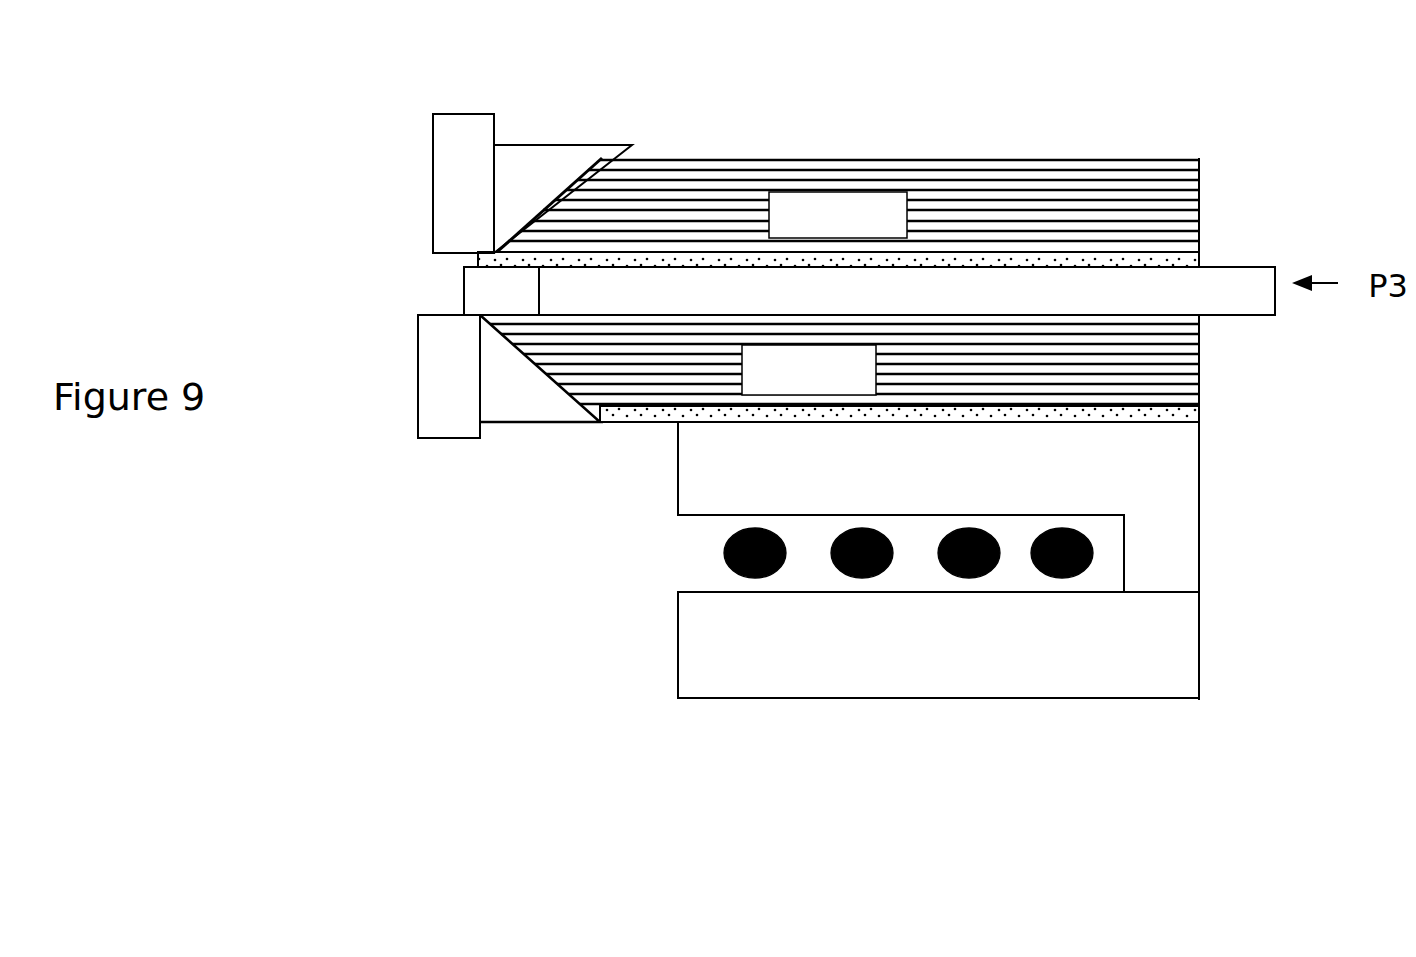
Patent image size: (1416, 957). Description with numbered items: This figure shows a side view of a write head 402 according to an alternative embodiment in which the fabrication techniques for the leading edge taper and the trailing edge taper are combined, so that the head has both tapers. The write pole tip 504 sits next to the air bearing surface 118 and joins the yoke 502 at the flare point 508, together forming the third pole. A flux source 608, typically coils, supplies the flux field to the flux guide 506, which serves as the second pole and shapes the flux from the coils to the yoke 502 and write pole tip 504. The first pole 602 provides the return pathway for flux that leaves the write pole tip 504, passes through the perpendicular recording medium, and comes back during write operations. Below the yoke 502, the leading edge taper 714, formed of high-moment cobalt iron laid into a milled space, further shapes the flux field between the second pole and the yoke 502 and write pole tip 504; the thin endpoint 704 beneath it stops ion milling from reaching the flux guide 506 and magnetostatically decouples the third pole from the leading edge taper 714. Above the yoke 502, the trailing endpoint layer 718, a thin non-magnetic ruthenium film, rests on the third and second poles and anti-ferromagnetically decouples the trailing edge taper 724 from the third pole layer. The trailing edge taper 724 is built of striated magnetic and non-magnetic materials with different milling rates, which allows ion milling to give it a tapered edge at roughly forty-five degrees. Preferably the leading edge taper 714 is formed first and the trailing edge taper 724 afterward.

The air bearing surface 118 is at (373, 300).
The write head 402 is at (432, 625).
The yoke 502 is at (1183, 283).
The write pole tip 504 is at (397, 264).
The flux guide 506 is at (1170, 700).
The flare point 508 is at (464, 266).
The P1 602 is at (1200, 483).
The flux source 608 is at (724, 554).
The endpoint 704 is at (630, 425).
The leading edge taper 714 is at (540, 332).
The trailing endpoint layer 718 is at (1184, 262).
The trailing edge taper 724 is at (1183, 158).